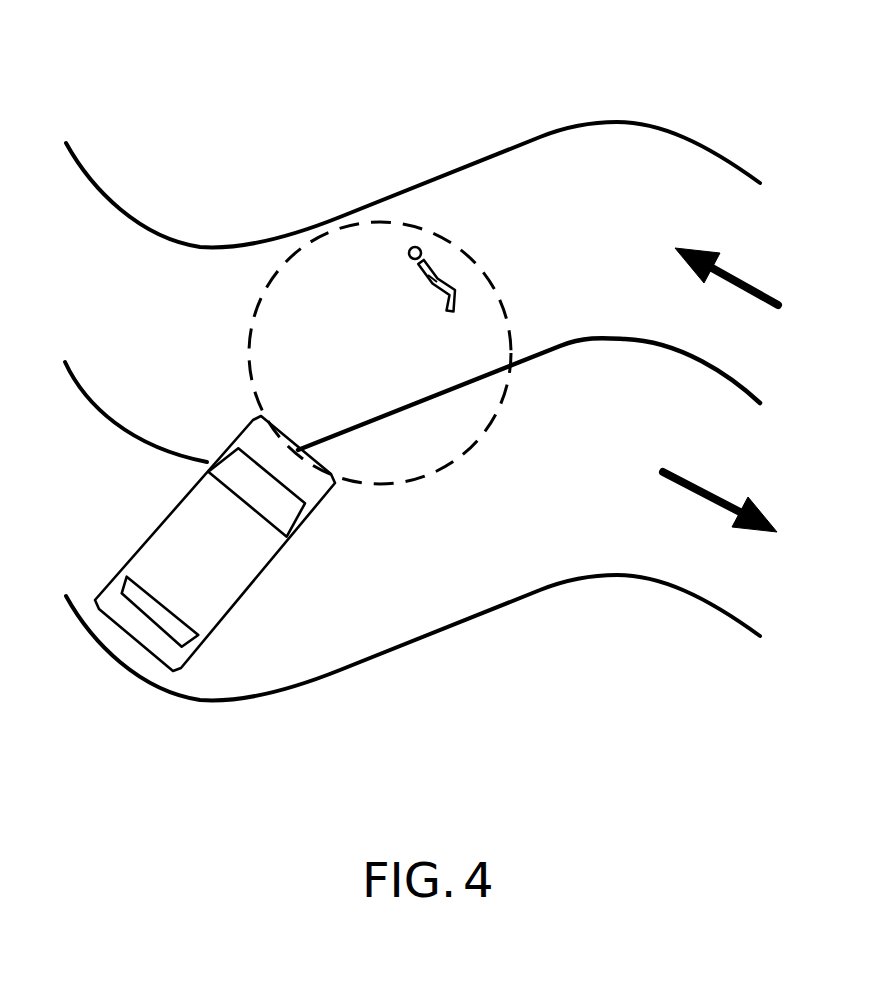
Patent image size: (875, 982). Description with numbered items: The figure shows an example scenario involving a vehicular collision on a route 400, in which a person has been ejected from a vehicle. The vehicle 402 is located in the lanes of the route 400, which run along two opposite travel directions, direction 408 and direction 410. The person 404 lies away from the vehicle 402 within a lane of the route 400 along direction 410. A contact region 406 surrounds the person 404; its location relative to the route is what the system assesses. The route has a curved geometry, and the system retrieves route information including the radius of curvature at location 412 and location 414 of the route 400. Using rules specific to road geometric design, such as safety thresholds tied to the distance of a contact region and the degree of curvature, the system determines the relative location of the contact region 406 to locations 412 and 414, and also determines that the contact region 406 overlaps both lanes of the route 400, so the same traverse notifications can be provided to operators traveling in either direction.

The route 400 is at (777, 78).
The vehicle 402 is at (267, 573).
The person 404 is at (409, 256).
The contact region 406 is at (507, 322).
The direction 408 is at (767, 517).
The direction 410 is at (767, 290).
The location 412 is at (148, 440).
The location 414 is at (645, 338).